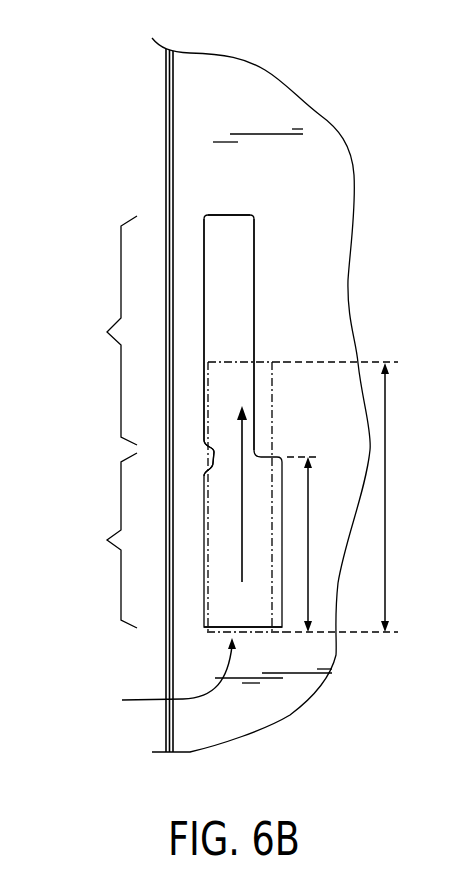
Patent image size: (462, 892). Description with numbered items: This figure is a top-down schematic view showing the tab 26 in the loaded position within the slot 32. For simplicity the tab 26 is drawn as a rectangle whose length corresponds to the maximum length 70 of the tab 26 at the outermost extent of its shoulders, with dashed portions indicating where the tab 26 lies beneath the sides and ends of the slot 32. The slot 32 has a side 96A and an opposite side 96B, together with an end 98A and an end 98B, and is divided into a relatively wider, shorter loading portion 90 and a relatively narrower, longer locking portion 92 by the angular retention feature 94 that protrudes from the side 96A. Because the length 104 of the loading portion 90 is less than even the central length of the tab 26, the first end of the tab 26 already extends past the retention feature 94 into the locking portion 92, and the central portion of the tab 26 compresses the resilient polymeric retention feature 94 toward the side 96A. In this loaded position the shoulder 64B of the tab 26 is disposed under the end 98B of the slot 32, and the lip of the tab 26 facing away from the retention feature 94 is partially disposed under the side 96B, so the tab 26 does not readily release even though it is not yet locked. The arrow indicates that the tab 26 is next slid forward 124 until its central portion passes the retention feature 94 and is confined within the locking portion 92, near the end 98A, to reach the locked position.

The slot 32 is at (326, 96).
The tab 26 is at (212, 495).
The side of slot 96A is at (196, 233).
The side of slot 96B is at (263, 279).
The end of slot 98A is at (228, 205).
The end of slot 98B is at (250, 646).
The retention feature 94 is at (205, 430).
The locking portion 92 is at (107, 330).
The loading portion 90 is at (107, 540).
The forward sliding direction 124 is at (245, 440).
The length of loading portion 104 is at (310, 542).
The maximum length 70 is at (386, 497).
The shoulder 64B is at (156, 678).